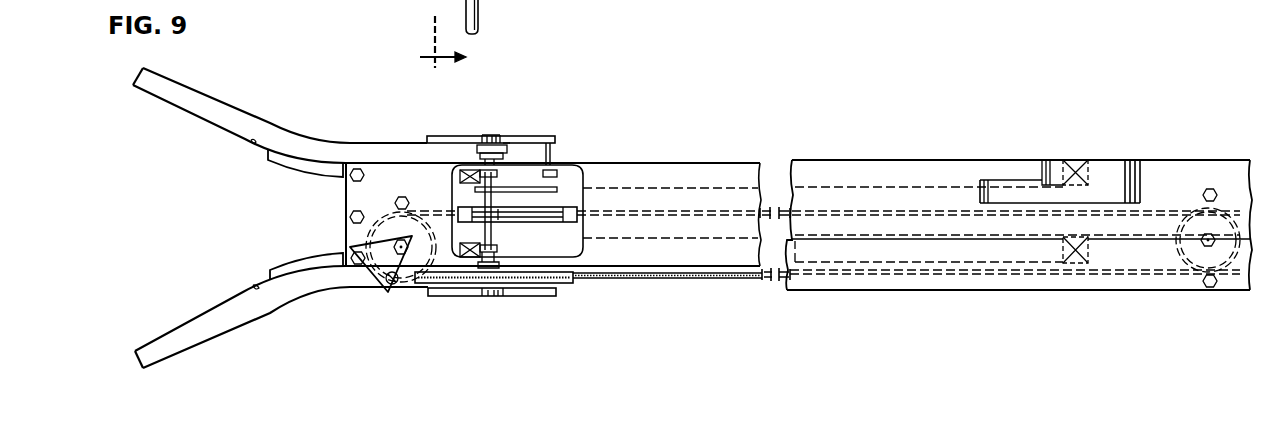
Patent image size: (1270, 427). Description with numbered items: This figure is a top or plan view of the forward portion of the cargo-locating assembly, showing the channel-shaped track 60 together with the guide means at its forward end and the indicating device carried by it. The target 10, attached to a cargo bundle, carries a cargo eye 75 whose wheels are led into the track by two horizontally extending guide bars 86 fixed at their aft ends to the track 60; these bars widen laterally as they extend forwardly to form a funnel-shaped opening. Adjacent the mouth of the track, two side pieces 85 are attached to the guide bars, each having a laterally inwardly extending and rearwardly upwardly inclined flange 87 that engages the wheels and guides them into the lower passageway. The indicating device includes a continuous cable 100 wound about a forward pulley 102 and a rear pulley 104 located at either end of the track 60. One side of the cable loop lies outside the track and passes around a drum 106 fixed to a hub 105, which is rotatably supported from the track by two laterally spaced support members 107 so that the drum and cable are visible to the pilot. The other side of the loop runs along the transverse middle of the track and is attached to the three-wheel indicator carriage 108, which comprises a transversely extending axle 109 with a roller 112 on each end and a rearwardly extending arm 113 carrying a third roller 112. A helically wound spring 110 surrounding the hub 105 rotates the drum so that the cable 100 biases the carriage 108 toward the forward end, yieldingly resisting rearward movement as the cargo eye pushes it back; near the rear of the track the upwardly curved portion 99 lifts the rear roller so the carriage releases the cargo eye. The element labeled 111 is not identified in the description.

The target 10 is at (431, 43).
The cargo eye 75 is at (480, 13).
The guide bars 86 is at (161, 99).
The side pieces 85 is at (250, 143).
The flange 87 is at (274, 167).
The track 60 is at (628, 158).
The upwardly curved portion 99 is at (1035, 173).
The pulley 104 is at (1201, 215).
The pulley 102 is at (397, 214).
The cable 100 is at (658, 210).
The drum 106 is at (578, 285).
The support members 107 is at (430, 137).
The hub 105 is at (478, 152).
The spring 110 is at (508, 143).
The bracket 111 is at (551, 163).
The arm 113 is at (547, 208).
The indicator carriage 108 is at (500, 200).
The axle 109 is at (485, 233).
The roller 112 is at (498, 173).